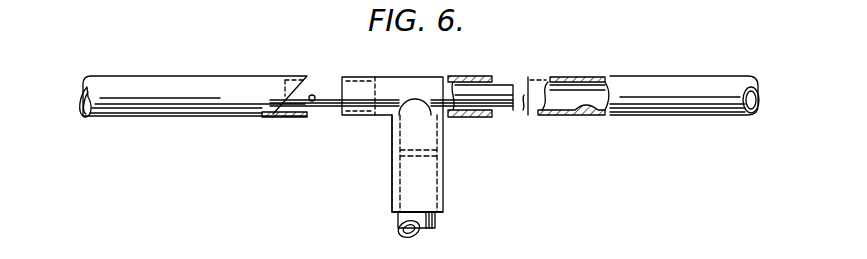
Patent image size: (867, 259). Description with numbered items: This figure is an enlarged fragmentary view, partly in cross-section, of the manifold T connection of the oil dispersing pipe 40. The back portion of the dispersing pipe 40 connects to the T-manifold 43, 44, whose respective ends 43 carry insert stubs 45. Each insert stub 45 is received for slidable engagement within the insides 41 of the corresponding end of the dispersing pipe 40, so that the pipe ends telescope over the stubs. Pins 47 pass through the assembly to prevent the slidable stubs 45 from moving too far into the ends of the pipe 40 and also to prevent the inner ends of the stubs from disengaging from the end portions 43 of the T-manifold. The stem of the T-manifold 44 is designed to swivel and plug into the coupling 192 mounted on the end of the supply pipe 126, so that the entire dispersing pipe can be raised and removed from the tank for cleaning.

The oil dispersing pipe 40 is at (162, 100).
The insides of the ends of the dispersing pipe 41 is at (588, 110).
The ends of the T-manifold 43 is at (360, 77).
The T-manifold 44 is at (438, 134).
The insert stubs 45 is at (330, 106).
The pins 47 is at (311, 102).
The supply pipe 126 is at (397, 222).
The coupling 192 is at (443, 195).